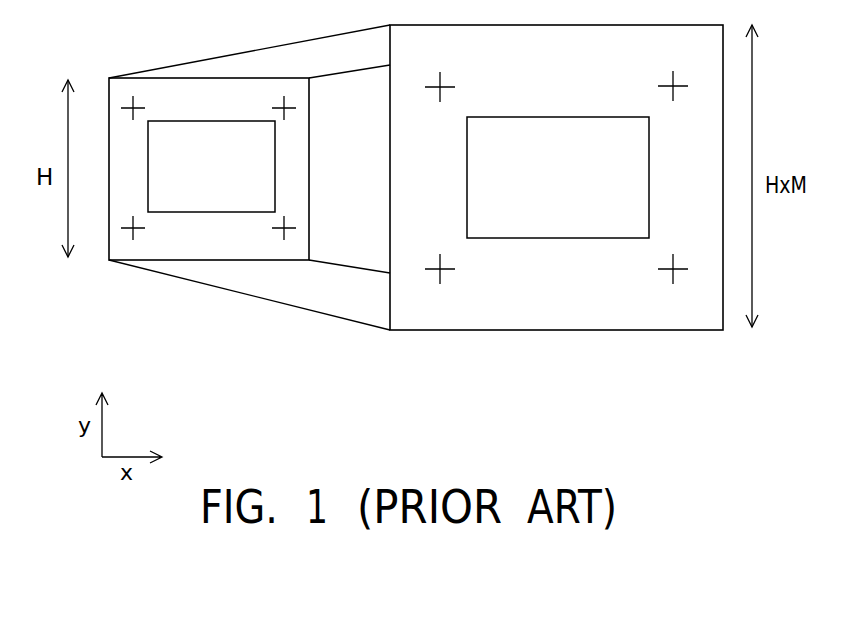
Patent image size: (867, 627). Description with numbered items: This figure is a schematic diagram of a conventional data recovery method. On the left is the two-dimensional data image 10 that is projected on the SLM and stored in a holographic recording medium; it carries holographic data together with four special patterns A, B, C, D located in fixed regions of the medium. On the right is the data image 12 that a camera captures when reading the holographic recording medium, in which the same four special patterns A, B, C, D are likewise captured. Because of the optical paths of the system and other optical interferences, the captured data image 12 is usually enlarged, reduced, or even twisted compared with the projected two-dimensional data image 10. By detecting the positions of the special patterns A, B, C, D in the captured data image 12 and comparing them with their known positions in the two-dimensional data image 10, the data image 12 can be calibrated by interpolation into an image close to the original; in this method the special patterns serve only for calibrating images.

The two-dimensional data image 10 is at (152, 261).
The data image 12 is at (420, 331).
The special pattern A is at (285, 87).
The special pattern B is at (484, 86).
The special pattern C is at (484, 261).
The special pattern D is at (285, 262).